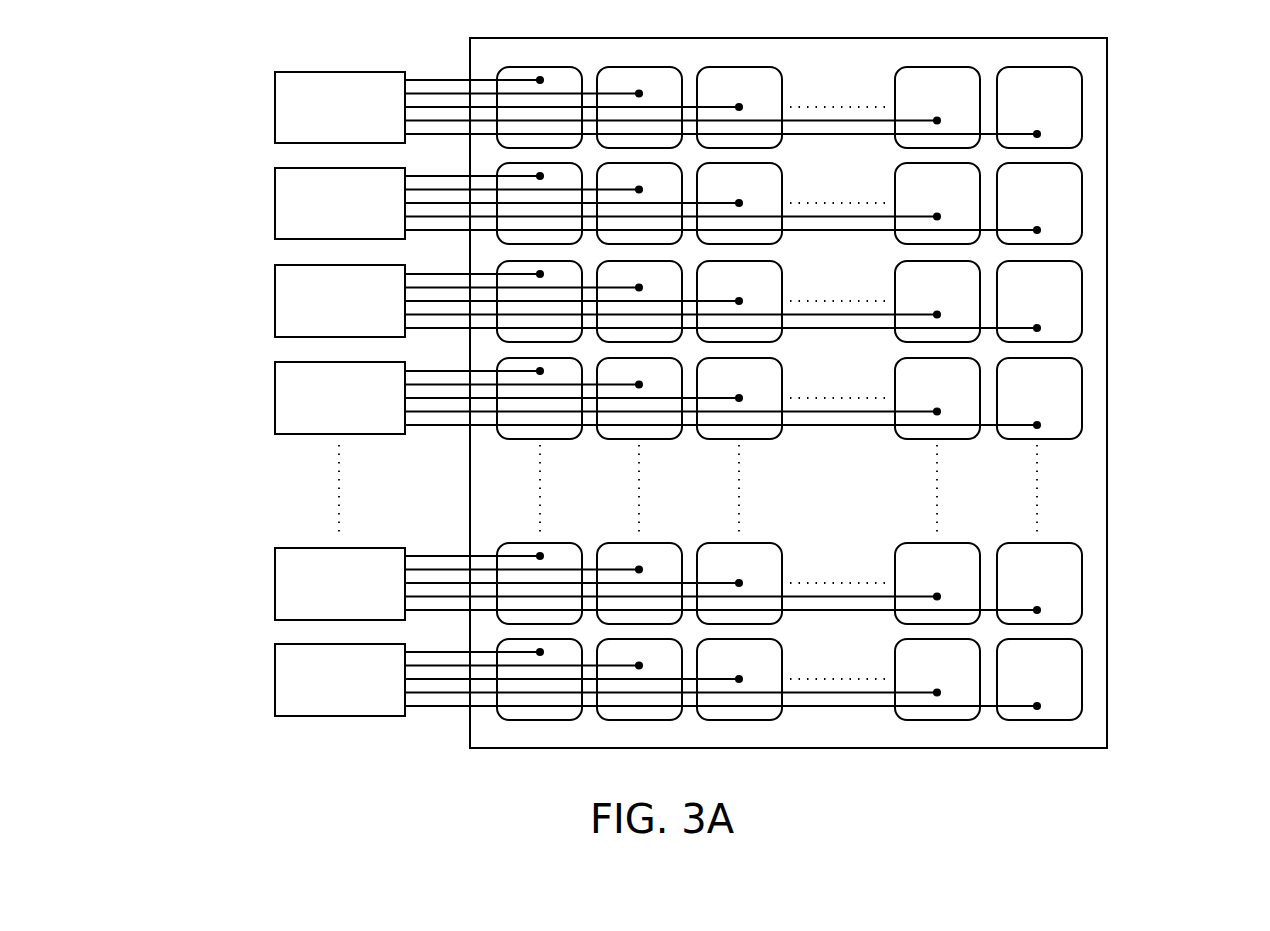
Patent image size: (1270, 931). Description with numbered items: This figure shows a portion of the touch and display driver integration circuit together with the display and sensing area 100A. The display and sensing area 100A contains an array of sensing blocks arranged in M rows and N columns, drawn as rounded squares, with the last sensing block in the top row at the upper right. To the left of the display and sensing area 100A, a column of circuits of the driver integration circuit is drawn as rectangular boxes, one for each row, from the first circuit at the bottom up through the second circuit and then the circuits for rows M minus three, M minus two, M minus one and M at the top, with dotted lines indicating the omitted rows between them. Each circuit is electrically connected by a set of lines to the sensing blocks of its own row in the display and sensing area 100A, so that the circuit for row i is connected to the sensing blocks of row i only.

The display and sensing area 100A is at (1107, 425).